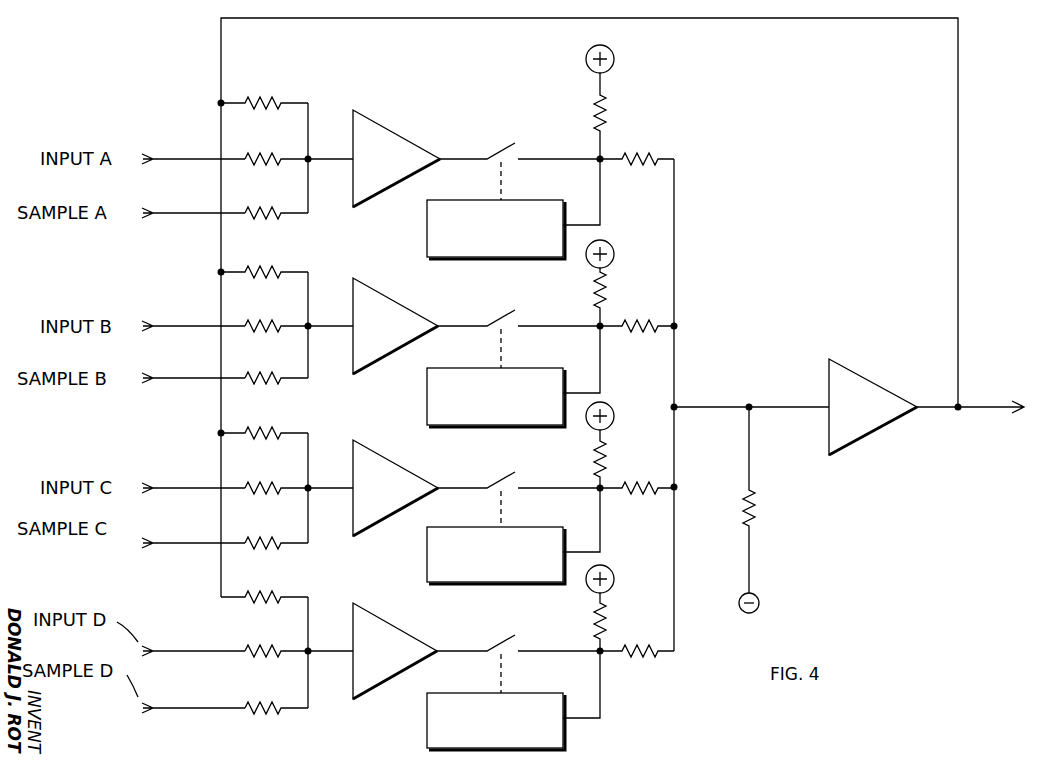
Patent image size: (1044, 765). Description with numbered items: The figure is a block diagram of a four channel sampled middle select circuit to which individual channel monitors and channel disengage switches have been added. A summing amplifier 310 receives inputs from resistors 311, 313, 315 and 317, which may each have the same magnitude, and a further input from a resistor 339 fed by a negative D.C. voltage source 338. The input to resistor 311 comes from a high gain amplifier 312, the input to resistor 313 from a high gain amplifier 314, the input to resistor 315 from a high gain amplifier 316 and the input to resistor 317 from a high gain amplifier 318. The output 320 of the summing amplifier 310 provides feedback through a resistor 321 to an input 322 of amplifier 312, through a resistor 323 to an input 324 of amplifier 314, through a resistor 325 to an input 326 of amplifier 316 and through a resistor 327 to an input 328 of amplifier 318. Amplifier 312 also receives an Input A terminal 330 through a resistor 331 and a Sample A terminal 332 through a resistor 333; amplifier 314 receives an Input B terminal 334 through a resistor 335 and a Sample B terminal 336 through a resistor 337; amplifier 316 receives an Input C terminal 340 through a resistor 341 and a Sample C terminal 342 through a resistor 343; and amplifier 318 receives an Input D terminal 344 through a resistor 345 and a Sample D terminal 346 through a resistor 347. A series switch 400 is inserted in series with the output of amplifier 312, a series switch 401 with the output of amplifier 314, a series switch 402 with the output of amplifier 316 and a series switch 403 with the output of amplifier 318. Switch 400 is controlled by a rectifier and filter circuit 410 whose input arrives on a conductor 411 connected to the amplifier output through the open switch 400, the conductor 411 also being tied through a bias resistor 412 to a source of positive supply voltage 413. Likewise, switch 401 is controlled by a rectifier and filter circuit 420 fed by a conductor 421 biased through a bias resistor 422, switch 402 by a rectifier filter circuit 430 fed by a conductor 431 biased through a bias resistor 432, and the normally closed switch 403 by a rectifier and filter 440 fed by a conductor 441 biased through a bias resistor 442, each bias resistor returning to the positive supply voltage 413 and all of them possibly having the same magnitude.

The summing amplifier 310 is at (870, 381).
The resistor 311 is at (632, 155).
The high gain amplifier 312 is at (394, 135).
The resistor 313 is at (629, 322).
The high gain amplifier 314 is at (391, 300).
The resistor 315 is at (624, 482).
The high gain amplifier 316 is at (394, 465).
The resistor 317 is at (627, 645).
The high gain amplifier 318 is at (389, 632).
The output 320 is at (958, 402).
The resistor 321 is at (258, 110).
The input 322 is at (337, 159).
The resistor 323 is at (258, 279).
The input 324 is at (340, 326).
The resistor 325 is at (258, 440).
The input 326 is at (338, 488).
The resistor 327 is at (258, 604).
The input 328 is at (340, 651).
The Input A terminal 330 is at (146, 157).
The resistor 331 is at (258, 167).
The Sample A terminal 332 is at (146, 211).
The resistor 333 is at (258, 221).
The Input B terminal 334 is at (146, 324).
The resistor 335 is at (258, 334).
The Sample B terminal 336 is at (146, 376).
The resistor 337 is at (258, 386).
The negative D.C. voltage source 338 is at (759, 600).
The resistor 339 is at (757, 510).
The Input C terminal 340 is at (146, 486).
The resistor 341 is at (258, 496).
The Sample C terminal 342 is at (146, 541).
The resistor 343 is at (258, 551).
The Input D terminal 344 is at (146, 650).
The resistor 345 is at (258, 659).
The Sample D terminal 346 is at (146, 706).
The resistor 347 is at (258, 716).
The series switch 400 is at (506, 141).
The series switch 401 is at (506, 308).
The series switch 402 is at (508, 472).
The series switch 403 is at (506, 636).
The rectifier and filter circuit 410 is at (528, 200).
The conductor 411 is at (603, 178).
The bias resistor 412 is at (606, 112).
The source of positive supply voltage 413 is at (611, 49).
The rectifier and filter circuit 420 is at (528, 368).
The conductor 421 is at (603, 350).
The bias resistor 422 is at (606, 282).
The rectifier filter circuit 430 is at (528, 527).
The conductor 431 is at (603, 512).
The bias resistor 432 is at (606, 445).
The rectifier and filter 440 is at (522, 693).
The conductor 441 is at (603, 676).
The bias resistor 442 is at (604, 608).